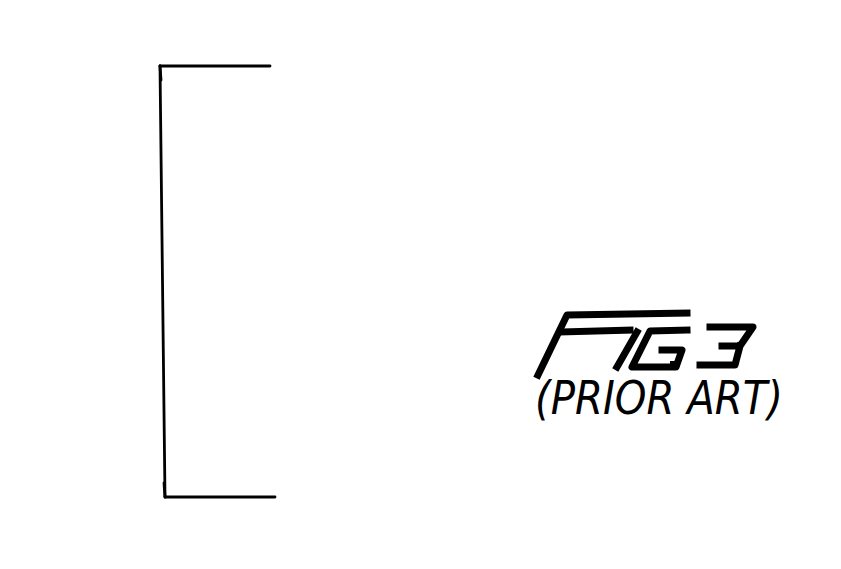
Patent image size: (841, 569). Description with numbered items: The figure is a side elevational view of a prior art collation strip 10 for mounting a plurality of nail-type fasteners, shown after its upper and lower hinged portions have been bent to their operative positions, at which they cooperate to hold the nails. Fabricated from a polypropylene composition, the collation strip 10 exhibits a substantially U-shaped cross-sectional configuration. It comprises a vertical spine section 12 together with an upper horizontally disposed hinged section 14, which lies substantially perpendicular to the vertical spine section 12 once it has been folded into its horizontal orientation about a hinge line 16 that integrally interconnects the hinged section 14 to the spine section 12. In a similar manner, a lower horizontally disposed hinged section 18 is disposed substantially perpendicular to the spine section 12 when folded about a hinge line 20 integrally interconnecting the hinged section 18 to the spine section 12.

The collation strip 10 is at (420, 127).
The vertical spine section 12 is at (160, 262).
The upper horizontally disposed hinged section 14 is at (227, 66).
The hinge line 16 is at (158, 66).
The lower horizontally disposed hinged section 18 is at (237, 497).
The hinge line 20 is at (165, 497).